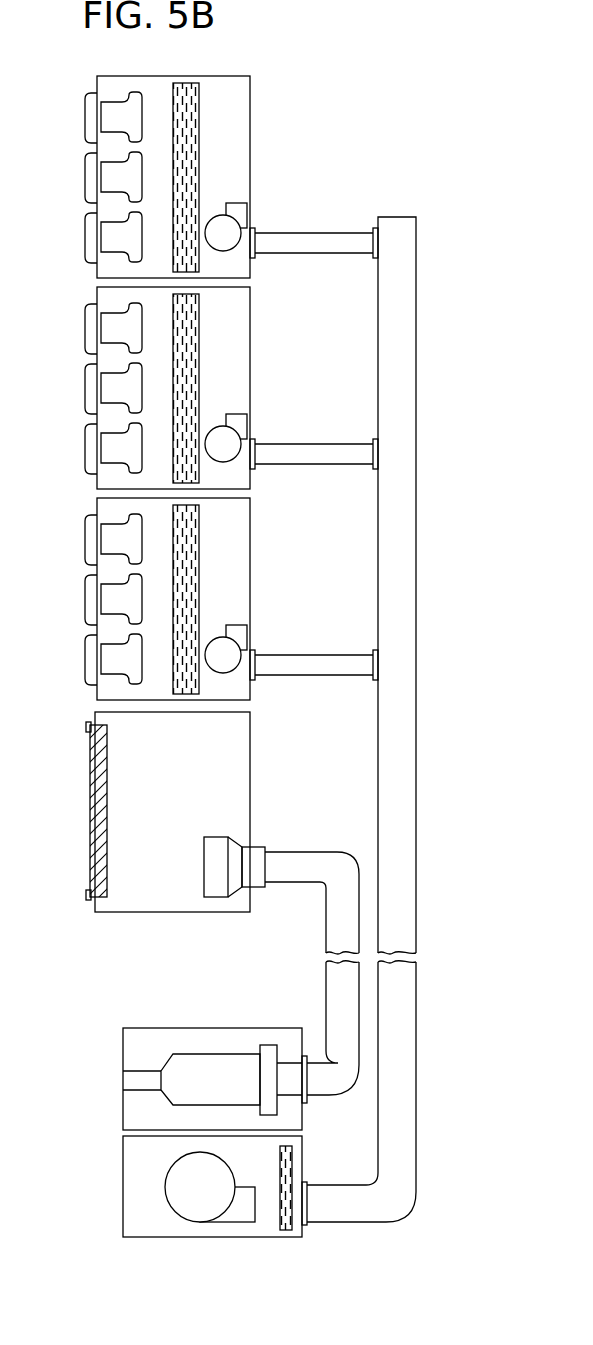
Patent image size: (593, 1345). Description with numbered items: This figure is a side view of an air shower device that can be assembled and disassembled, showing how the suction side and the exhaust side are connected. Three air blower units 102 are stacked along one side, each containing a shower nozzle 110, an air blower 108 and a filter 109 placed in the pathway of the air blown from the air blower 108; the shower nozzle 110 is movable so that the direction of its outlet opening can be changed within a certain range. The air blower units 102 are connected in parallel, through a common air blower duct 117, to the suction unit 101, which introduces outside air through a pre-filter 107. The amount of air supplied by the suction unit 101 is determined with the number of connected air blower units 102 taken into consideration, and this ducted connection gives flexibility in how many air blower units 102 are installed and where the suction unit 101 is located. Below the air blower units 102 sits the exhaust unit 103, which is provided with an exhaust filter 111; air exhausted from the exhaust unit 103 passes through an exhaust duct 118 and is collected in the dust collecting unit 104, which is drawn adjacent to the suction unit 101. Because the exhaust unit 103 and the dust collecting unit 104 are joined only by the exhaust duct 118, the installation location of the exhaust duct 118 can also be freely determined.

The suction unit 101 is at (128, 1153).
The air blower unit 102 is at (245, 88).
The exhaust unit 103 is at (245, 722).
The dust collecting unit 104 is at (128, 1045).
The pre-filter 107 is at (292, 1226).
The air blower 108 is at (238, 204).
The filter 109 is at (198, 178).
The shower nozzle 110 is at (108, 130).
The exhaust filter 111 is at (92, 830).
The air blower duct 117 is at (405, 322).
The exhaust duct 118 is at (312, 860).